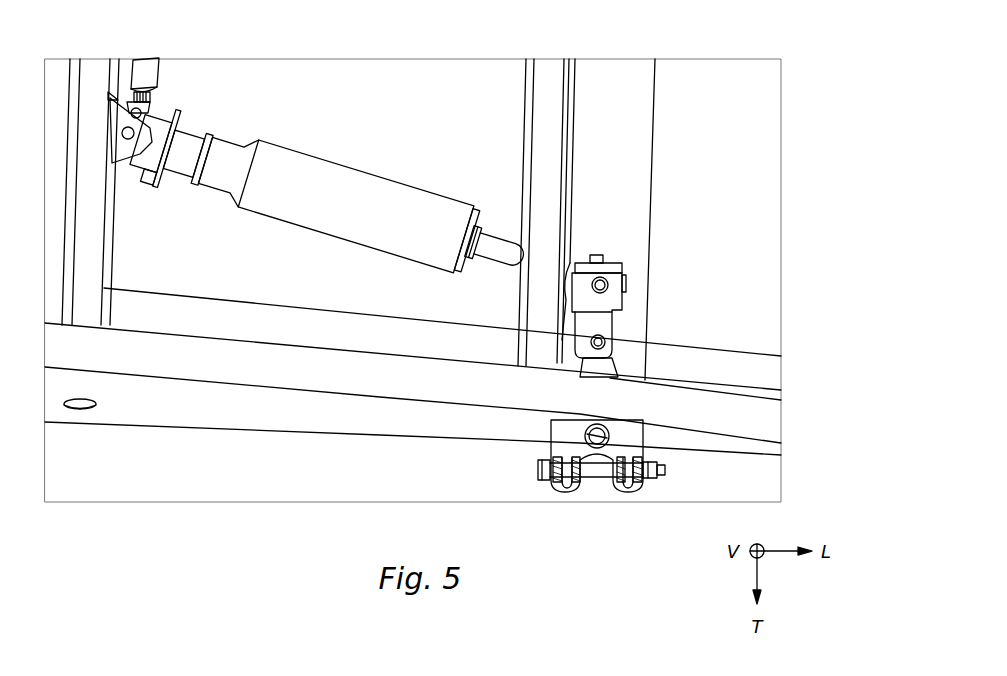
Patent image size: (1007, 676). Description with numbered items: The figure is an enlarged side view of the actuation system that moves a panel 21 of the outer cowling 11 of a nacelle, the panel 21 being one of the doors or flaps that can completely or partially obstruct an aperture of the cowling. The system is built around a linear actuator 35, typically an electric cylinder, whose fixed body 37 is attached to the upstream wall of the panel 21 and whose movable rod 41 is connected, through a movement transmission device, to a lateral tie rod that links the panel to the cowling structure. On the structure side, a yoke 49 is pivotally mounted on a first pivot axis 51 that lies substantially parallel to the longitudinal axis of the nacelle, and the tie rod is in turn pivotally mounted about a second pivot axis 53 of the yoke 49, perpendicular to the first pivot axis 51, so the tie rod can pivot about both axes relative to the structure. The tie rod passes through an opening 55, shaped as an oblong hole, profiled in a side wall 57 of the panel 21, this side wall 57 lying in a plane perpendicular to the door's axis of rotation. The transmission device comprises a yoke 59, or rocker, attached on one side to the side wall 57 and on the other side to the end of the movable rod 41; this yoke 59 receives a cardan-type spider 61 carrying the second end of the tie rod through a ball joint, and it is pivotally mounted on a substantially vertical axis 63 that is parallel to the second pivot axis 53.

The outer cowling 11 is at (199, 472).
The panel 21 is at (750, 143).
The linear actuator 35 is at (377, 197).
The fixed body 37 is at (273, 157).
The movable rod 41 is at (497, 243).
The yoke 49 is at (580, 442).
The first pivot axis 51 is at (598, 470).
The second pivot axis 53 is at (647, 475).
The opening 55 is at (567, 420).
The side wall 57 is at (422, 422).
The yoke 59 is at (582, 282).
The spider 61 is at (620, 284).
The axis 63 is at (605, 343).